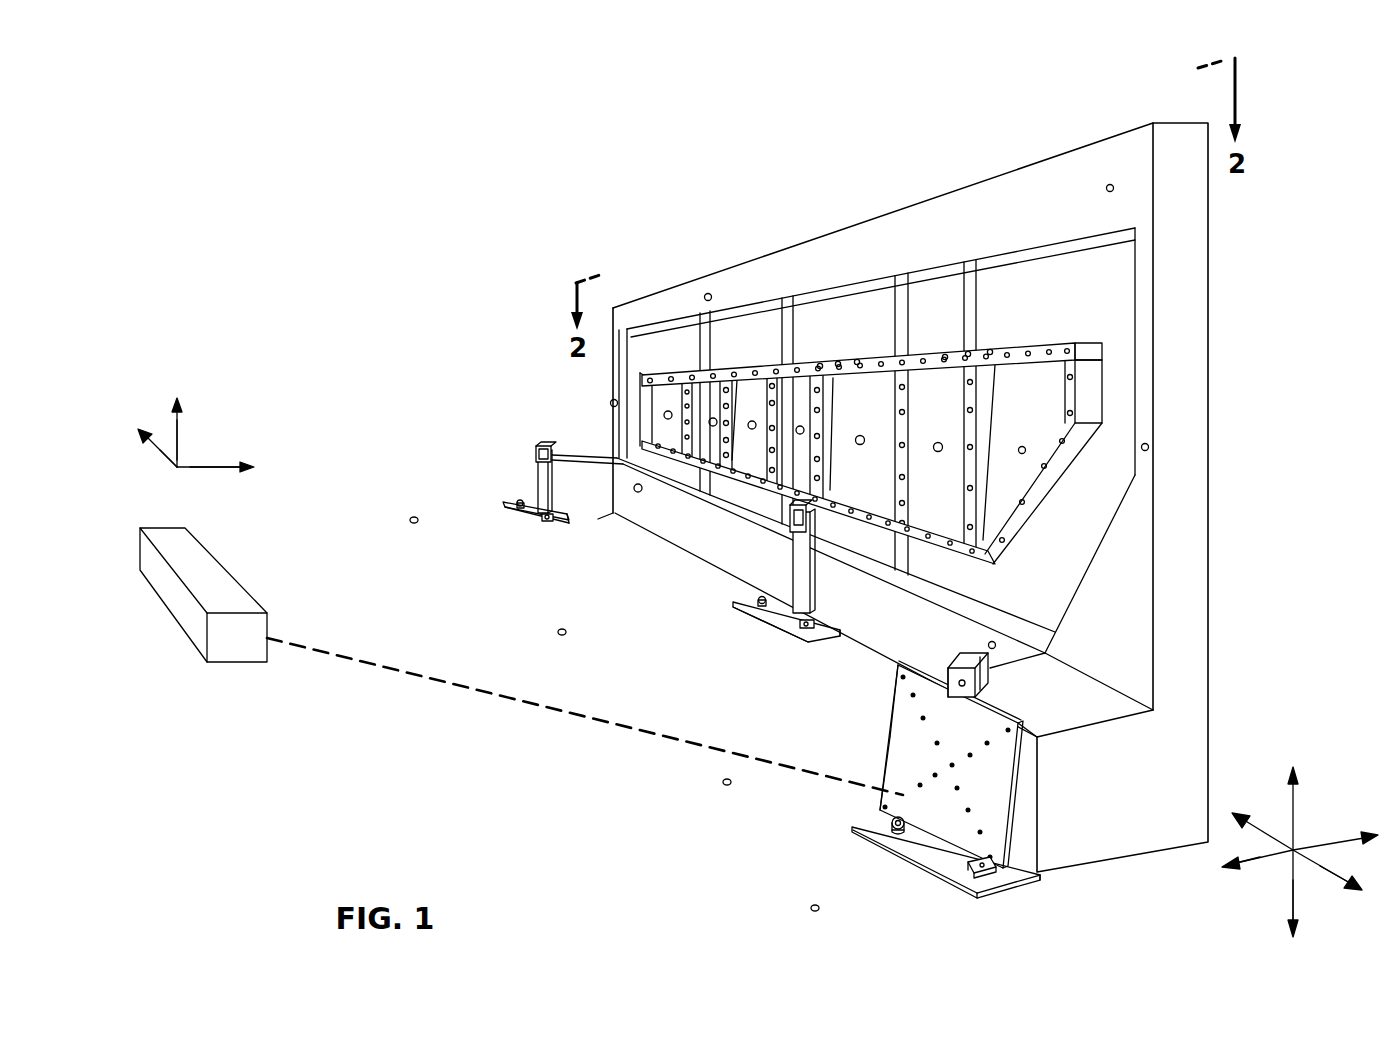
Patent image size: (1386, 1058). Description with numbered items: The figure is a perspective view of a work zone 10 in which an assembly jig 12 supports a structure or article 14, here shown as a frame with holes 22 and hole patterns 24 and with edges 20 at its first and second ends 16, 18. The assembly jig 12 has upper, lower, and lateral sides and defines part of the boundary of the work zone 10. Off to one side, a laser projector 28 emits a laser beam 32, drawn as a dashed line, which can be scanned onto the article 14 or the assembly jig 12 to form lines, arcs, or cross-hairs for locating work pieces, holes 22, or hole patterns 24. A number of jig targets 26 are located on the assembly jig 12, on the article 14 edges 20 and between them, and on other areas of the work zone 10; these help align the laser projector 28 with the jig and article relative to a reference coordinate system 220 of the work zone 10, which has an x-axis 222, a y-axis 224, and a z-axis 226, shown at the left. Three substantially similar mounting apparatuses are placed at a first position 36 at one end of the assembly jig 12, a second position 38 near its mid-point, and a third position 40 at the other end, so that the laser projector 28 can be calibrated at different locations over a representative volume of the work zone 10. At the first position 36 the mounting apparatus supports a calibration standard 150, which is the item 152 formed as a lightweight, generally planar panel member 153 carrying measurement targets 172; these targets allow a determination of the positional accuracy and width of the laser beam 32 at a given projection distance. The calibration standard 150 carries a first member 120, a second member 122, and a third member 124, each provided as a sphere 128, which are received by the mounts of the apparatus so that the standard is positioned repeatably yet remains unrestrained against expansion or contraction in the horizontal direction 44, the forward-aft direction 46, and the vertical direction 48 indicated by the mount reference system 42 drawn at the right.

The work zone 10 is at (326, 226).
The assembly jig 12 is at (652, 293).
The article 14 is at (910, 392).
The first end 16 is at (1097, 349).
The second end 18 is at (655, 393).
The edges 20 is at (655, 414).
The holes 22 is at (856, 360).
The hole patterns 24 is at (989, 350).
The jig targets 26 is at (1107, 185).
The laser projector 28 is at (168, 590).
The laser beam 32 is at (378, 666).
The first position 36 is at (929, 770).
The second position 38 is at (770, 590).
The third position 40 is at (531, 487).
The mount reference system 42 is at (1298, 842).
The horizontal direction 44 is at (1322, 872).
The forward-aft direction 46 is at (1263, 862).
The vertical direction 48 is at (1290, 884).
The first member 120 is at (892, 828).
The second member 122 is at (968, 870).
The third member 124 is at (985, 682).
The sphere 128 is at (962, 683).
The calibration standard 150 is at (959, 764).
The item 152 is at (892, 710).
The panel member 153 is at (884, 760).
The measurement targets 172 is at (982, 835).
The reference coordinate system 220 is at (177, 468).
The x-axis 222 is at (198, 468).
The y-axis 224 is at (165, 452).
The z-axis 226 is at (178, 431).